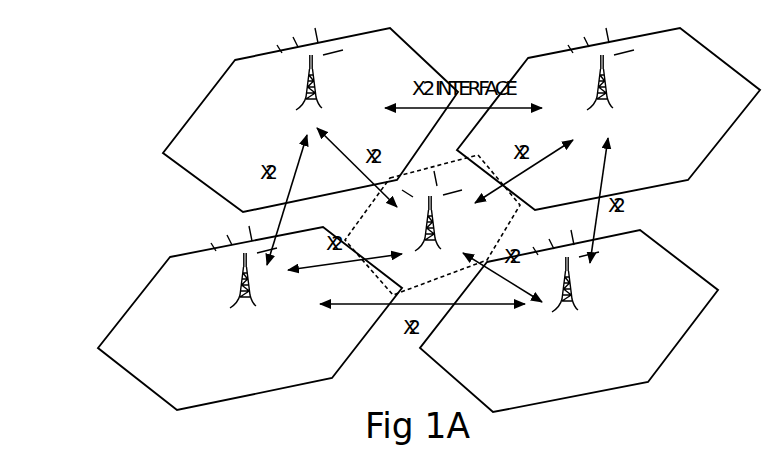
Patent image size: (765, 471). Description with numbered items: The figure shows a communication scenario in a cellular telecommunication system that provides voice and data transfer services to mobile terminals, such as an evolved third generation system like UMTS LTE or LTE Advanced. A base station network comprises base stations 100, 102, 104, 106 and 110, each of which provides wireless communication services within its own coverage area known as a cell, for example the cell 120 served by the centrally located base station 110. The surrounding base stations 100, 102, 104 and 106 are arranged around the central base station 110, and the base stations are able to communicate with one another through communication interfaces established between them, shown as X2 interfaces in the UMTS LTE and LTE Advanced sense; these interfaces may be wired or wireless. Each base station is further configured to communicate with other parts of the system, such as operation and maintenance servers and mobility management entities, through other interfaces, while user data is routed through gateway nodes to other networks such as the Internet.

The base station 100 is at (319, 106).
The base station 102 is at (253, 306).
The base station 104 is at (610, 108).
The base station 106 is at (575, 311).
The base station 110 is at (437, 250).
The cell 120 is at (402, 242).